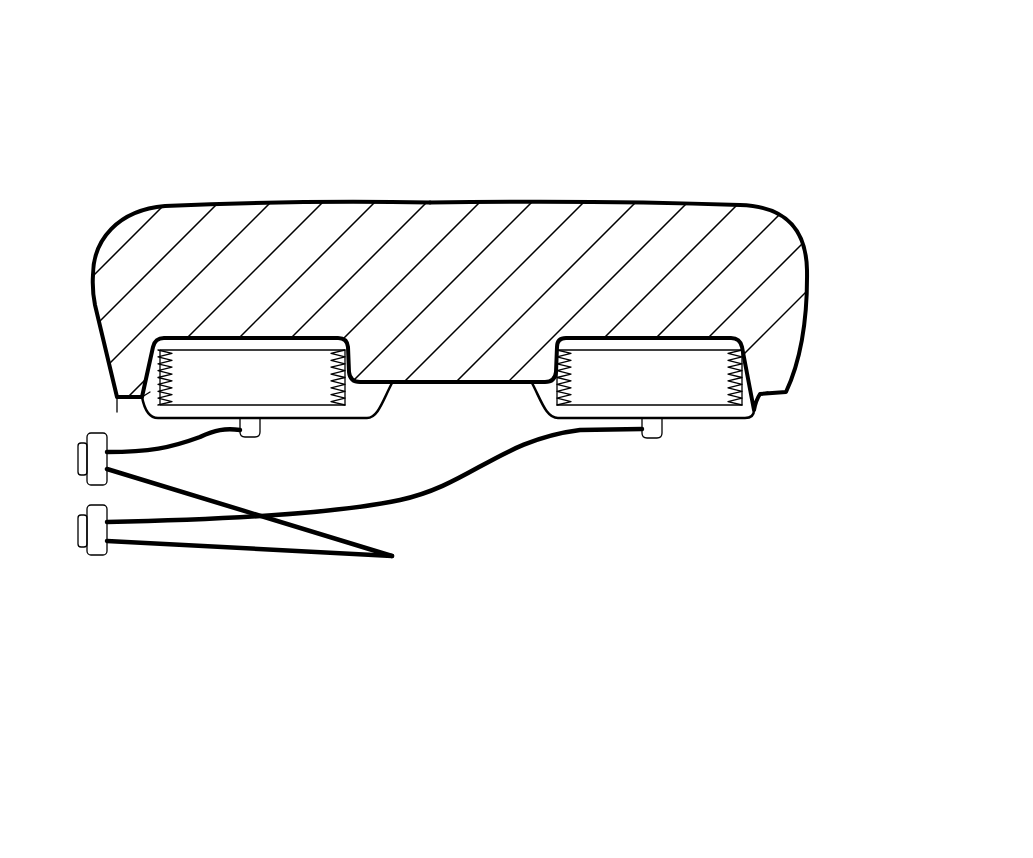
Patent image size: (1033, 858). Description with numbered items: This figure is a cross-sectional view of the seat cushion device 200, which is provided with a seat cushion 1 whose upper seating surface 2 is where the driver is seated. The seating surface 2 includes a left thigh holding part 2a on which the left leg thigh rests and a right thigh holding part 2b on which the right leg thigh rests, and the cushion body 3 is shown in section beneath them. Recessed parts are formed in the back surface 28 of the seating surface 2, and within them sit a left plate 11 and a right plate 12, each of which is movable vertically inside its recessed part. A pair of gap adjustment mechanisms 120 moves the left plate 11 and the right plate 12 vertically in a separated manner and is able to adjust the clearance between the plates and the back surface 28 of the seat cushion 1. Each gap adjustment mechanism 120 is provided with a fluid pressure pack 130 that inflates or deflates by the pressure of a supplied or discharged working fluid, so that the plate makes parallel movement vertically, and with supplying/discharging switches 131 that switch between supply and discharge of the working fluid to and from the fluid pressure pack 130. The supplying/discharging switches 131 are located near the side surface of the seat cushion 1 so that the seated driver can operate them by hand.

The seat cushion device 200 is at (765, 108).
The seat cushion 1 is at (708, 205).
The seating surface 2 is at (467, 204).
The left thigh holding part 2a is at (625, 204).
The right thigh holding part 2b is at (234, 204).
The cushion pad 3 is at (383, 204).
The left plate 11 is at (668, 343).
The right plate 12 is at (305, 345).
The back surface 28 is at (137, 390).
The gap adjustment mechanism 120 is at (175, 330).
The fluid pressure pack 130 is at (292, 372).
The supplying/discharging switch 131 is at (94, 433).